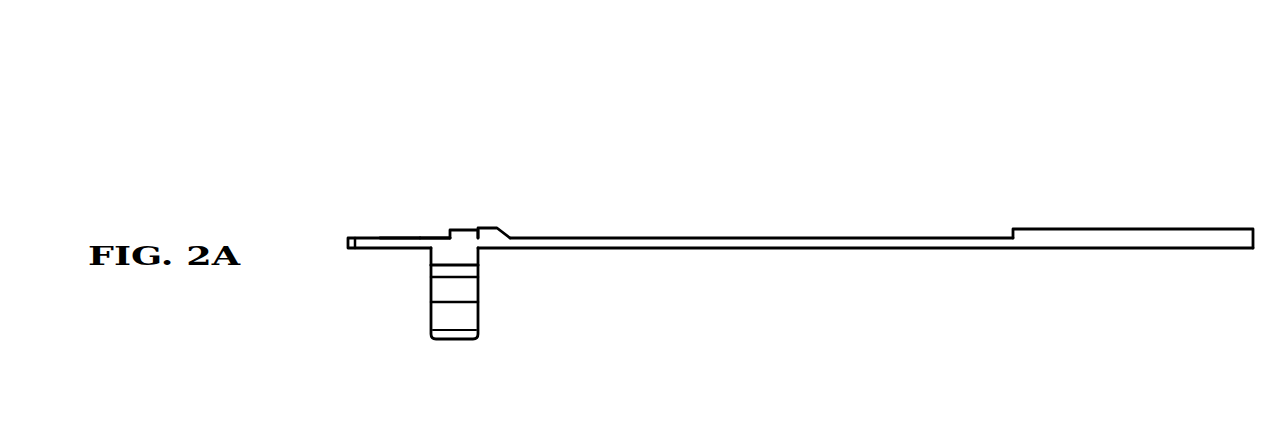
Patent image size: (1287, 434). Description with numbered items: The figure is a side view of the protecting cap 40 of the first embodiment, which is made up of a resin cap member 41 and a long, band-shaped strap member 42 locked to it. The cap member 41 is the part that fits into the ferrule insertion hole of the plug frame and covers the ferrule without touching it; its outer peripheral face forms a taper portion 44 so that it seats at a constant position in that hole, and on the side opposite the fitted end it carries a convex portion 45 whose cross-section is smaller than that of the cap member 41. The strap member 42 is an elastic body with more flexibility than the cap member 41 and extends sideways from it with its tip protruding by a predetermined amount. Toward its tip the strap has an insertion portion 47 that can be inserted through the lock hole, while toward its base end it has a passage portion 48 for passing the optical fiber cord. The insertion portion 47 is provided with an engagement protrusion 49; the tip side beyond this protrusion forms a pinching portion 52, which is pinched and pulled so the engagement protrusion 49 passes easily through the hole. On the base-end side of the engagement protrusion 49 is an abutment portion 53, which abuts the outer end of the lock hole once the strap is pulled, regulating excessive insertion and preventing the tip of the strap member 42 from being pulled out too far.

The protecting cap 40 is at (860, 157).
The cap member 41 is at (462, 317).
The strap member 42 is at (812, 243).
The taper portion 44 is at (438, 290).
The convex portion 45 is at (470, 233).
The insertion portion 47 is at (400, 240).
The passage portion 48 is at (1137, 243).
The engagement protrusion 49 is at (445, 237).
The pinching portion 52 is at (366, 239).
The abutment portion 53 is at (482, 235).